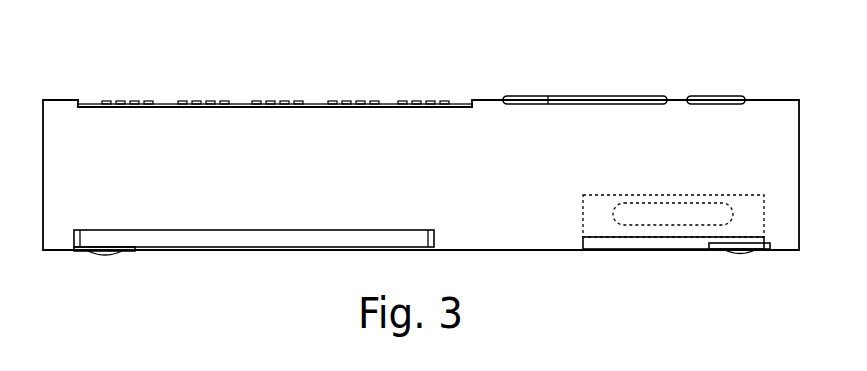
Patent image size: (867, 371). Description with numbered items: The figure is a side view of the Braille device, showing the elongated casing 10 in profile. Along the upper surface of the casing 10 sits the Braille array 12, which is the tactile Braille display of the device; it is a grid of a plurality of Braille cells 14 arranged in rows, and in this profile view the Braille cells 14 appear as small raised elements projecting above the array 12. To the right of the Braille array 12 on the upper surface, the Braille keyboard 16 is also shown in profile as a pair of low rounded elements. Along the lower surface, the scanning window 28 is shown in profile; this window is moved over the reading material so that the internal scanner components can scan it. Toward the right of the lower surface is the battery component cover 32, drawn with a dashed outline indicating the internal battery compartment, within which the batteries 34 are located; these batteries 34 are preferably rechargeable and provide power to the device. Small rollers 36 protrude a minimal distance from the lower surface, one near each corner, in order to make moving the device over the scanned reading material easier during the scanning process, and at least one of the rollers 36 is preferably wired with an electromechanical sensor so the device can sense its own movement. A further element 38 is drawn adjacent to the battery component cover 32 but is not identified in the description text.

The casing 10 is at (37, 117).
The Braille array 12 is at (260, 92).
The Braille cells 14 is at (137, 100).
The Braille keyboard 16 is at (708, 95).
The scanning window 28 is at (205, 251).
The battery component cover 32 is at (595, 252).
The batteries 34 is at (650, 215).
The roller 36 is at (97, 256).
The contact pad 38 is at (750, 218).